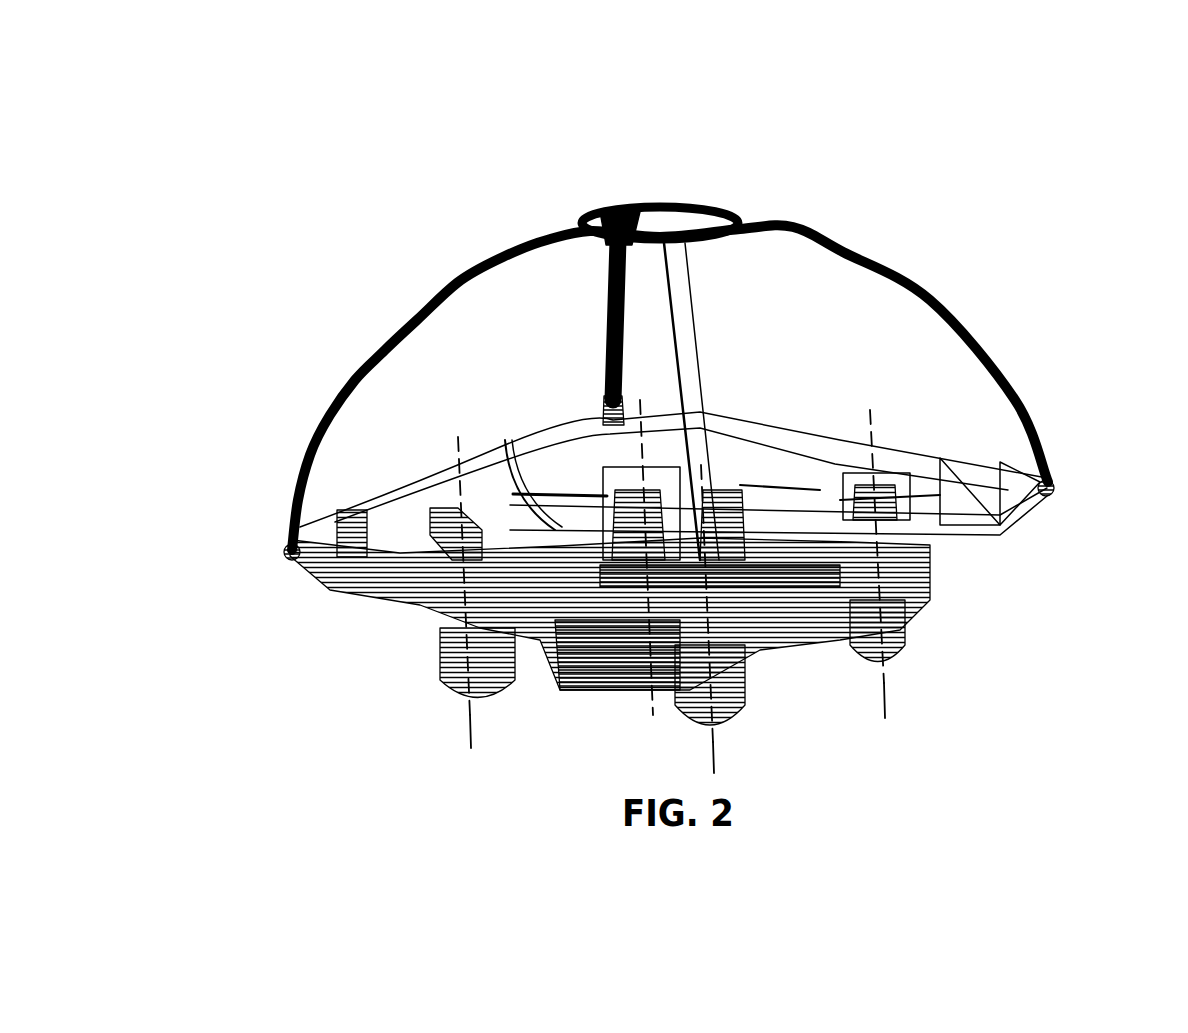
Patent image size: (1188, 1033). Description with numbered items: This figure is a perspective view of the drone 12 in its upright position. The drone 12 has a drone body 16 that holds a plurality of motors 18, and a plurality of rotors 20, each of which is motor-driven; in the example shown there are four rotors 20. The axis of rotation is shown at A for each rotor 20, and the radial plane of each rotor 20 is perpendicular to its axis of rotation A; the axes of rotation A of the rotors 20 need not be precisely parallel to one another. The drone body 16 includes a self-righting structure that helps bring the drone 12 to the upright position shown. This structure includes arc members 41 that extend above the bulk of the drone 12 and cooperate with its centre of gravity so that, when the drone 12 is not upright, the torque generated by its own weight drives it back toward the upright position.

The drone 12 is at (462, 150).
The arc members 41 is at (420, 305).
The rotors 20 is at (445, 522).
The motors 18 is at (453, 657).
The drone body 16 is at (585, 658).
The axis of rotation A is at (465, 720).